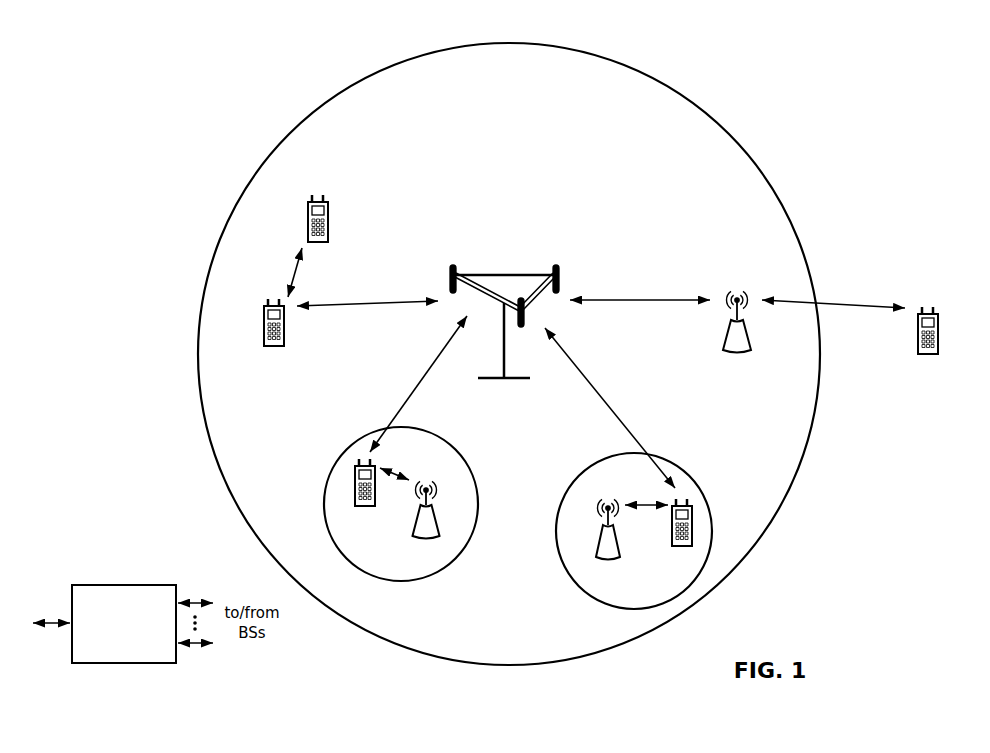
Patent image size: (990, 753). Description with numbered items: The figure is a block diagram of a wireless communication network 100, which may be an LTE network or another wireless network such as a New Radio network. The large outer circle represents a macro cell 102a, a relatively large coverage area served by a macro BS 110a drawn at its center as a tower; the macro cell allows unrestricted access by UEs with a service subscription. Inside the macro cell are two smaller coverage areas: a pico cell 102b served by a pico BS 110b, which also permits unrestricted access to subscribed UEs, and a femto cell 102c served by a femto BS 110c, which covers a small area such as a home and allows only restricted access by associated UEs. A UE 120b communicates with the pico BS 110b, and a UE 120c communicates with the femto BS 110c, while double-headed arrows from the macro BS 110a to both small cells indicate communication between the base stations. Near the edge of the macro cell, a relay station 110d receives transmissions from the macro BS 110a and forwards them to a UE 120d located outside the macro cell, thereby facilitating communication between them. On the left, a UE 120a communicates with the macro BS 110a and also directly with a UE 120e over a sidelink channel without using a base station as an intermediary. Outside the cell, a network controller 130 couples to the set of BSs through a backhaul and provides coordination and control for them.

The wireless network 100 is at (852, 108).
The macro cell 102a is at (712, 118).
The pico cell 102b is at (470, 452).
The femto cell 102c is at (575, 479).
The macro BS 110a is at (506, 272).
The pico BS 110b is at (438, 525).
The femto BS 110c is at (597, 541).
The relay station 110d is at (739, 295).
The UE 120a is at (266, 308).
The UE 120b is at (355, 502).
The UE 120c is at (672, 539).
The UE 120d is at (938, 321).
The UE 120e is at (310, 208).
The network controller 130 is at (121, 584).